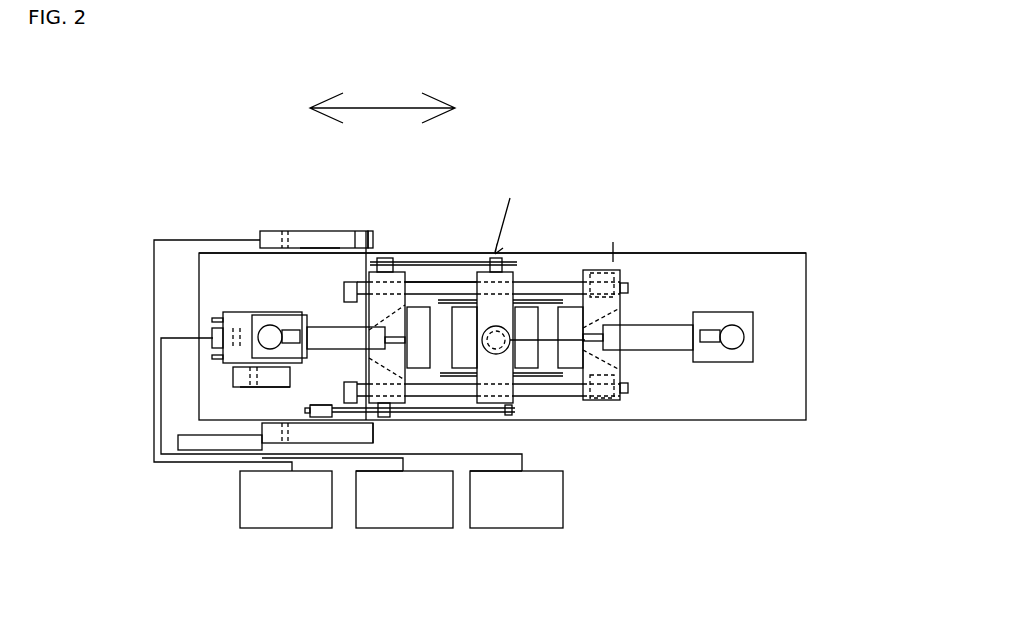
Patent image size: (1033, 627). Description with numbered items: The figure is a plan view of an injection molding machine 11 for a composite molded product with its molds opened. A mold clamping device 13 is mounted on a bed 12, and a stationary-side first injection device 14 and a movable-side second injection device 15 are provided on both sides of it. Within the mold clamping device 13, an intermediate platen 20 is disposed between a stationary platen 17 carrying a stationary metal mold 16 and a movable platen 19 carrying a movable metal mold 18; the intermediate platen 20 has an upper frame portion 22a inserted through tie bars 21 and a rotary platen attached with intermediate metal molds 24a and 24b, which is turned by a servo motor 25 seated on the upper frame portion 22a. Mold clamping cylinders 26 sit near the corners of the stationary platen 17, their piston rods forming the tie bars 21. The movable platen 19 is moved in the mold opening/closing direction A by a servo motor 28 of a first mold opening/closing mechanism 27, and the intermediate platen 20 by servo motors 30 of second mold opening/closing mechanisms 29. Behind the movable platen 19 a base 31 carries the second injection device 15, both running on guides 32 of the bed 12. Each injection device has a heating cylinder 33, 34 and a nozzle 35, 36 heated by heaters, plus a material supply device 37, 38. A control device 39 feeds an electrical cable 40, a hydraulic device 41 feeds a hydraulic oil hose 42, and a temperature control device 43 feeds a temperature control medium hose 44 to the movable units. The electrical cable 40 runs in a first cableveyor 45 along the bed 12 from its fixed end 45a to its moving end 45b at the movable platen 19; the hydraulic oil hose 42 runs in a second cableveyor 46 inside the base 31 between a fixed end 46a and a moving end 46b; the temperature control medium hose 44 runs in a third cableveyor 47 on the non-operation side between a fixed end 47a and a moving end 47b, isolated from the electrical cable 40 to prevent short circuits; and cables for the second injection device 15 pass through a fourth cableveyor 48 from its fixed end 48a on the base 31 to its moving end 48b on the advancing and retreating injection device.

The injection molding machine 11 is at (633, 169).
The bed 12 is at (793, 295).
The mold clamping device 13 is at (557, 176).
The first injection device 14 is at (710, 312).
The second injection device 15 is at (286, 304).
The stationary metal mold 16 is at (570, 312).
The stationary platen 17 is at (614, 262).
The movable metal mold 18 is at (421, 323).
The movable platen 19 is at (389, 257).
The intermediate platen 20 is at (507, 215).
The tie bar 21 is at (575, 388).
The upper frame portion 22a is at (497, 262).
The intermediate metal mold 24a is at (523, 325).
The intermediate metal mold 24b is at (466, 320).
The servo motor for rotating the intermediate metal mold 25 is at (506, 349).
The mold clamping cylinder 26 is at (617, 278).
The first mold opening/closing mechanism 27 is at (348, 421).
The servo motor 28 is at (323, 415).
The second mold opening/closing mechanism 29 is at (410, 262).
The servo motor 30 is at (398, 258).
The base 31 is at (230, 310).
The guide 32 is at (249, 313).
The heating cylinder 33 is at (657, 337).
The heating cylinder 34 is at (313, 246).
The nozzle 35 is at (627, 350).
The nozzle 36 is at (333, 248).
The material supply device 37 is at (732, 326).
The material supply device 38 is at (243, 310).
The control device 39 is at (551, 517).
The electrical cable 40 is at (493, 453).
The hydraulic device 41 is at (428, 517).
The hydraulic oil hose 42 is at (368, 450).
The temperature control device 43 is at (263, 517).
The temperature control medium hose 44 is at (152, 430).
The cableveyor 45 is at (198, 465).
The fixed end 45a is at (270, 437).
The moving end 45b is at (369, 436).
The second cableveyor 46 is at (212, 340).
The fixed end 46a is at (212, 357).
The moving end 46b is at (214, 321).
The third cableveyor 47 is at (268, 238).
The fixed end 47a is at (288, 246).
The moving end 47b is at (358, 246).
The fourth cableveyor 48 is at (235, 370).
The fixed end 48a is at (248, 388).
The moving end 48b is at (250, 388).
The mold opening/closing direction A is at (382, 104).